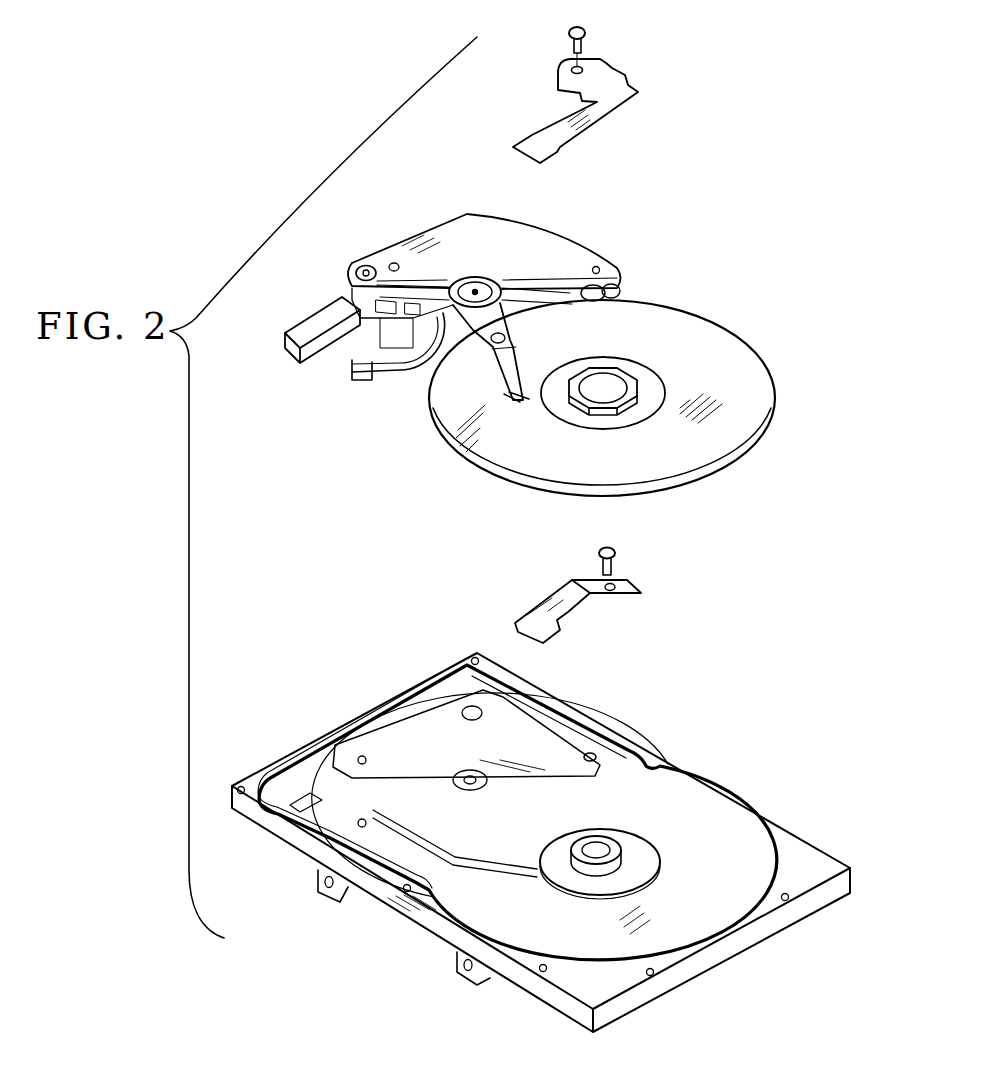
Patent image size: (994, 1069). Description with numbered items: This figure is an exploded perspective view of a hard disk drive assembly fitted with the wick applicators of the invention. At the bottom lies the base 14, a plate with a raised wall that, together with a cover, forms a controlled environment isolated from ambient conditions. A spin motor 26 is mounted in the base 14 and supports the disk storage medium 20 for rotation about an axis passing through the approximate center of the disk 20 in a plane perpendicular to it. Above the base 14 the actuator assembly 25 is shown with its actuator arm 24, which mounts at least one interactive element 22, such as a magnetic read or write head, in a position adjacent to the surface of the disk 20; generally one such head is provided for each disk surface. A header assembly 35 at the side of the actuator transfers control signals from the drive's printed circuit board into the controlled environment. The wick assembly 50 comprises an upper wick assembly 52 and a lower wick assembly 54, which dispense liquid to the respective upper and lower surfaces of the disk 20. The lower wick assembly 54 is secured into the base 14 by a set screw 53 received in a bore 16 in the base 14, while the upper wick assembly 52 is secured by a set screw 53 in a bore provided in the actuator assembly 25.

The base 14 is at (833, 867).
The bore 16 is at (592, 750).
The disk storage medium 20 is at (757, 382).
The interactive element 22 is at (503, 397).
The actuator arm 24 is at (483, 315).
The actuator assembly 25 is at (457, 235).
The spin motor 26 is at (598, 268).
The header assembly 35 is at (328, 352).
The wick assembly 50 is at (632, 107).
The upper wick assembly 52 is at (558, 108).
The set screw 53 is at (588, 40).
The lower wick assembly 54 is at (568, 592).